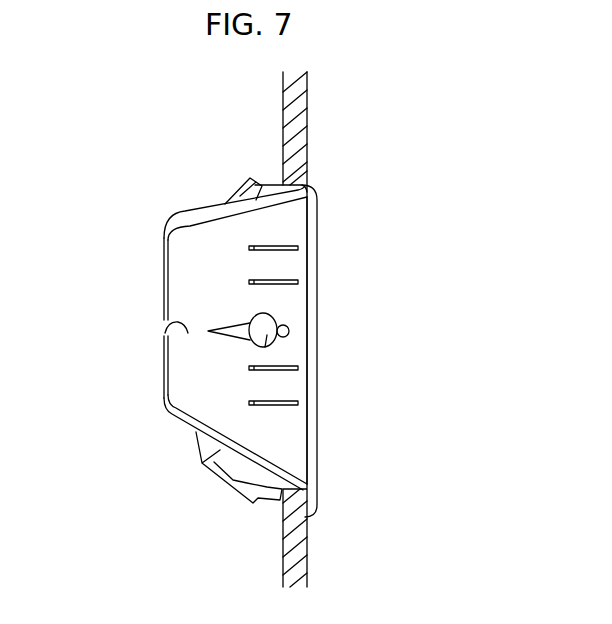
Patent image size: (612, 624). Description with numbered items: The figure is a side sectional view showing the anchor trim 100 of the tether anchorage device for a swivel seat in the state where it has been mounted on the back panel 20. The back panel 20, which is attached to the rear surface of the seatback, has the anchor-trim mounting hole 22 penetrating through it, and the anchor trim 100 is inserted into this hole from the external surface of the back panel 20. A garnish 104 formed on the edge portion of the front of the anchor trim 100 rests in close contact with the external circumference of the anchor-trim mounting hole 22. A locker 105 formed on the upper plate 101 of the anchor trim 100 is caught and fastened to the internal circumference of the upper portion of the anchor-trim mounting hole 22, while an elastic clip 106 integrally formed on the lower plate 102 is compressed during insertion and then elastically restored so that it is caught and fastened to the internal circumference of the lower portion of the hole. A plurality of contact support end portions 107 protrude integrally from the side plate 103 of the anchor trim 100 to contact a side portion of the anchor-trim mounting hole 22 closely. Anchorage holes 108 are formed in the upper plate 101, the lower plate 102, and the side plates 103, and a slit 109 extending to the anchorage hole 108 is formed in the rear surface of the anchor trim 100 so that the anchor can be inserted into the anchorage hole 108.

The back panel 20 is at (297, 107).
The anchor-trim mounting hole 22 is at (307, 192).
The anchor trim 100 is at (180, 205).
The upper plate 101 is at (243, 187).
The lower plate 102 is at (223, 458).
The side plate 103 is at (290, 353).
The garnish 104 is at (315, 230).
The locker 105 is at (255, 206).
The elastic clip 106 is at (238, 480).
The contact support end portion 107 is at (297, 400).
The anchorage hole 108 is at (289, 328).
The slit 109 is at (167, 324).